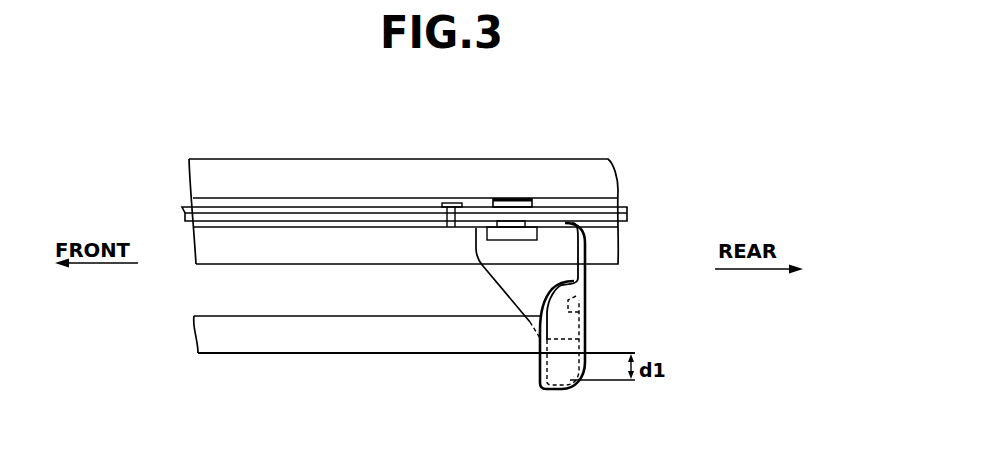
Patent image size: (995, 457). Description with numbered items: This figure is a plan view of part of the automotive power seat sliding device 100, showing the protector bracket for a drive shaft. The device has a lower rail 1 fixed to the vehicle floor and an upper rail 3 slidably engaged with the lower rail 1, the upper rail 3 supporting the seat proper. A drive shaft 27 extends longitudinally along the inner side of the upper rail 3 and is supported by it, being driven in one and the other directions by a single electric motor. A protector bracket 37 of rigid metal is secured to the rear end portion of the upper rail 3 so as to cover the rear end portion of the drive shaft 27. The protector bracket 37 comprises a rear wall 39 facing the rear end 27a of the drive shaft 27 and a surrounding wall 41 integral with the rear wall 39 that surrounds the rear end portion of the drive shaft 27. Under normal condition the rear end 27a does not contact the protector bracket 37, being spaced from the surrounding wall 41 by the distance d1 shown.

The automotive power seat sliding device 100 is at (702, 97).
The lower rail 1 is at (562, 164).
The upper rail 3 is at (401, 195).
The drive shaft 27 is at (278, 342).
The rear end of drive shaft 27a is at (580, 339).
The protector bracket 37 is at (492, 288).
The rear wall 39 is at (582, 312).
The surrounding wall 41 is at (548, 372).